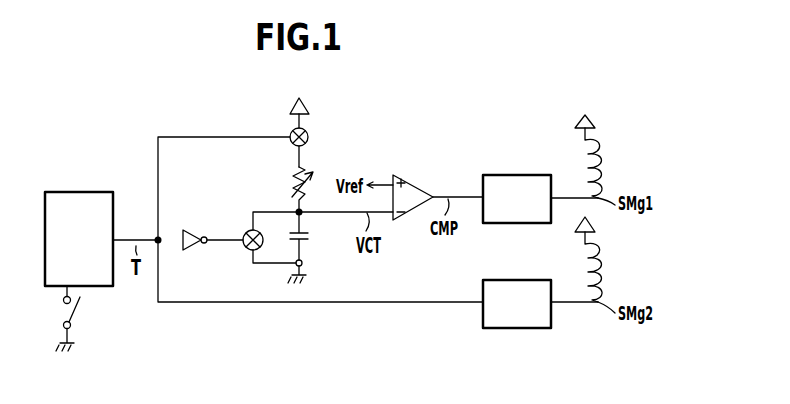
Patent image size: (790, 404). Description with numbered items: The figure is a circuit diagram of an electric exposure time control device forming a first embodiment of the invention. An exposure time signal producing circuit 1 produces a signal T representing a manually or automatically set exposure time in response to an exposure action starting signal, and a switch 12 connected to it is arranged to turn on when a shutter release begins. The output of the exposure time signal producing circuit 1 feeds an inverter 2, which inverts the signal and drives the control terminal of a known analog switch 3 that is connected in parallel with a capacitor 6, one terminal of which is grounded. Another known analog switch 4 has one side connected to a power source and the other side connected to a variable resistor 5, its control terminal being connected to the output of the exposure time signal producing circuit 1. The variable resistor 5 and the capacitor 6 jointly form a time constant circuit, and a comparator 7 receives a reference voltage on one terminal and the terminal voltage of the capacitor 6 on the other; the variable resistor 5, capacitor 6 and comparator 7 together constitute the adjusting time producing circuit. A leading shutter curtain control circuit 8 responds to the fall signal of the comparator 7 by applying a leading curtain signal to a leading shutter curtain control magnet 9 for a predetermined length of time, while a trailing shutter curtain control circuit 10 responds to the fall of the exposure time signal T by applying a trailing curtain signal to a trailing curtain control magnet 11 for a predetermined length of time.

The exposure time signal producing circuit 1 is at (82, 192).
The inverter 2 is at (190, 230).
The analog switch 3 is at (246, 247).
The analog switch 4 is at (309, 137).
The variable resistor 5 is at (293, 184).
The capacitor 6 is at (309, 239).
The comparator 7 is at (411, 179).
The leading shutter curtain control circuit 8 is at (512, 178).
The leading shutter curtain control magnet 9 is at (602, 174).
The trailing shutter curtain control circuit 10 is at (512, 283).
The trailing curtain control magnet 11 is at (602, 276).
The switch 12 is at (77, 322).